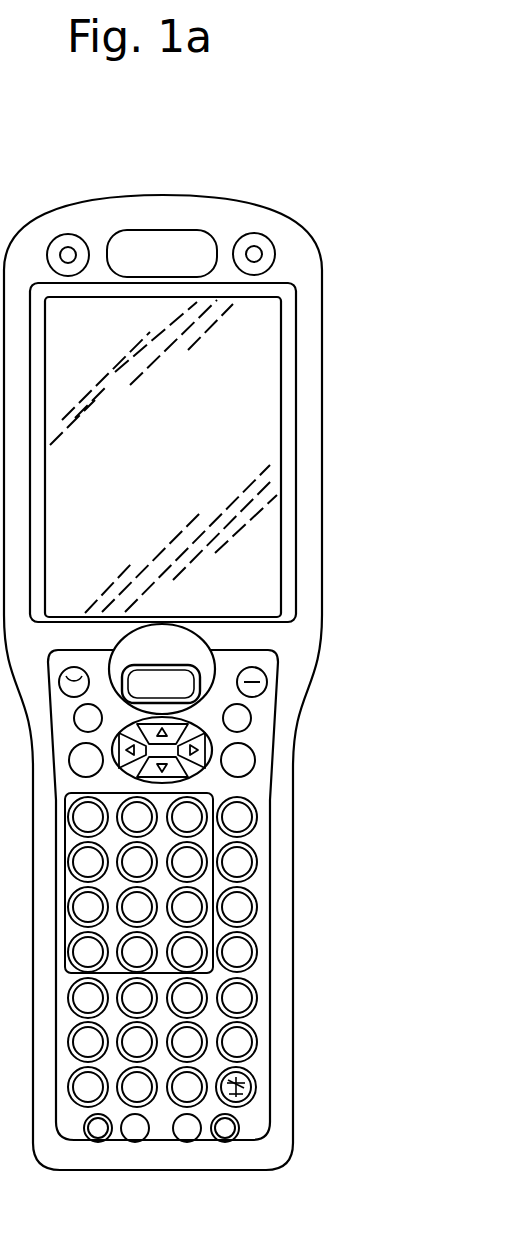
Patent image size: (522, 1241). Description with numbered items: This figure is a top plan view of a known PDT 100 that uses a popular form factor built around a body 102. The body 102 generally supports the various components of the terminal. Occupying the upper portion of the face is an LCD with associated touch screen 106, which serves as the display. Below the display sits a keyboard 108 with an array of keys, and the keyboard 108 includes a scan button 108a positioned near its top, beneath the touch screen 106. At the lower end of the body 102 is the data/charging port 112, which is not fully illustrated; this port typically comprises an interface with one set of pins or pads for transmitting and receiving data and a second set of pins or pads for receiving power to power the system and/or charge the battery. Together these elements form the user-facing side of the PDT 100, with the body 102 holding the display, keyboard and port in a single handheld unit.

The PDT 100 is at (318, 150).
The body 102 is at (338, 397).
The LCD with associated touch screen 106 is at (190, 446).
The keyboard 108 is at (257, 790).
The scan button 108a is at (203, 660).
The data/charging port 112 is at (182, 1172).